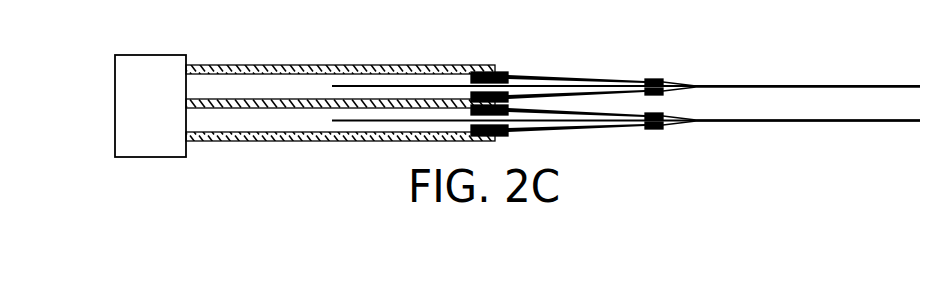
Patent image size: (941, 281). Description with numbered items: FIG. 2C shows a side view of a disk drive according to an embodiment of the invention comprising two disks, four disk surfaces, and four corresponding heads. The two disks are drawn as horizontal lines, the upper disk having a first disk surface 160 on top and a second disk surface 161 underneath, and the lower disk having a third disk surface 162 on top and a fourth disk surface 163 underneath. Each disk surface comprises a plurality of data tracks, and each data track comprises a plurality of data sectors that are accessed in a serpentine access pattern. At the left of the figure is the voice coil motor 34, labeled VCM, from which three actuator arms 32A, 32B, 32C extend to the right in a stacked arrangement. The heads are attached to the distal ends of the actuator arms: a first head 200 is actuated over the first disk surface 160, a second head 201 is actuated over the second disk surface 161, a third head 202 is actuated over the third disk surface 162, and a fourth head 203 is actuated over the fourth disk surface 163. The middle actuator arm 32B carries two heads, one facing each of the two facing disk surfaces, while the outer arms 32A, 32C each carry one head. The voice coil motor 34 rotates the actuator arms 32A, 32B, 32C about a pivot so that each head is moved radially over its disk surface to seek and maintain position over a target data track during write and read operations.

The voice coil motor 34 is at (115, 102).
The actuator arm 32A is at (240, 65).
The actuator arm 32B is at (280, 99).
The actuator arm 32C is at (317, 132).
The first head 200 is at (683, 66).
The second head 201 is at (686, 88).
The head 202 is at (686, 120).
The head 203 is at (665, 128).
The first disk surface 160 is at (810, 85).
The second disk surface 161 is at (849, 88).
The disk surface 162 is at (850, 119).
The disk surface 163 is at (855, 122).